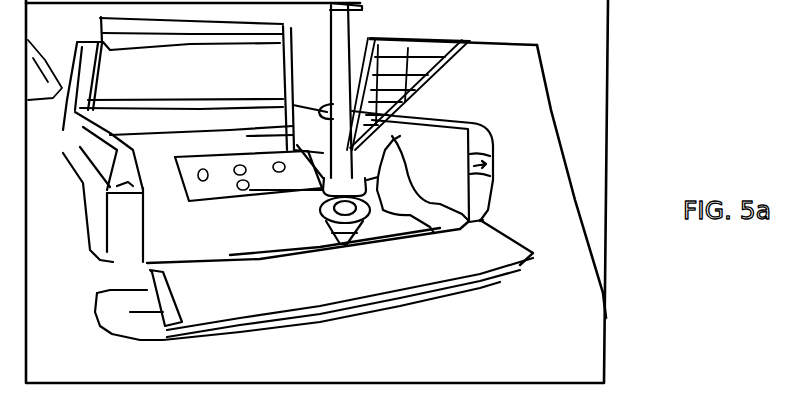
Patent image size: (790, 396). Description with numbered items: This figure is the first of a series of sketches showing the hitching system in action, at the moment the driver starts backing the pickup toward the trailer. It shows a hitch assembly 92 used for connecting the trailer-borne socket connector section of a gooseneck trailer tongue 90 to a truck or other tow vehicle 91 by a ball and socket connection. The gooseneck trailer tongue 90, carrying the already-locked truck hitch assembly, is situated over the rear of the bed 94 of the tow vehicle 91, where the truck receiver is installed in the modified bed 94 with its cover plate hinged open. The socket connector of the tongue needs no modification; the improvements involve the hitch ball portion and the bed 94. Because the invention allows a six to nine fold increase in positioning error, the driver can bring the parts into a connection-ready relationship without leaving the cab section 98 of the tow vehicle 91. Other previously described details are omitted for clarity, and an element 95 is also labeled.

The gooseneck trailer tongue 90 is at (423, 94).
The tow vehicle 91 is at (381, 340).
The hitch assembly 92 is at (393, 210).
The bed 94 is at (192, 201).
The connector / swivel base 95 is at (322, 207).
The cab section 98 is at (214, 86).